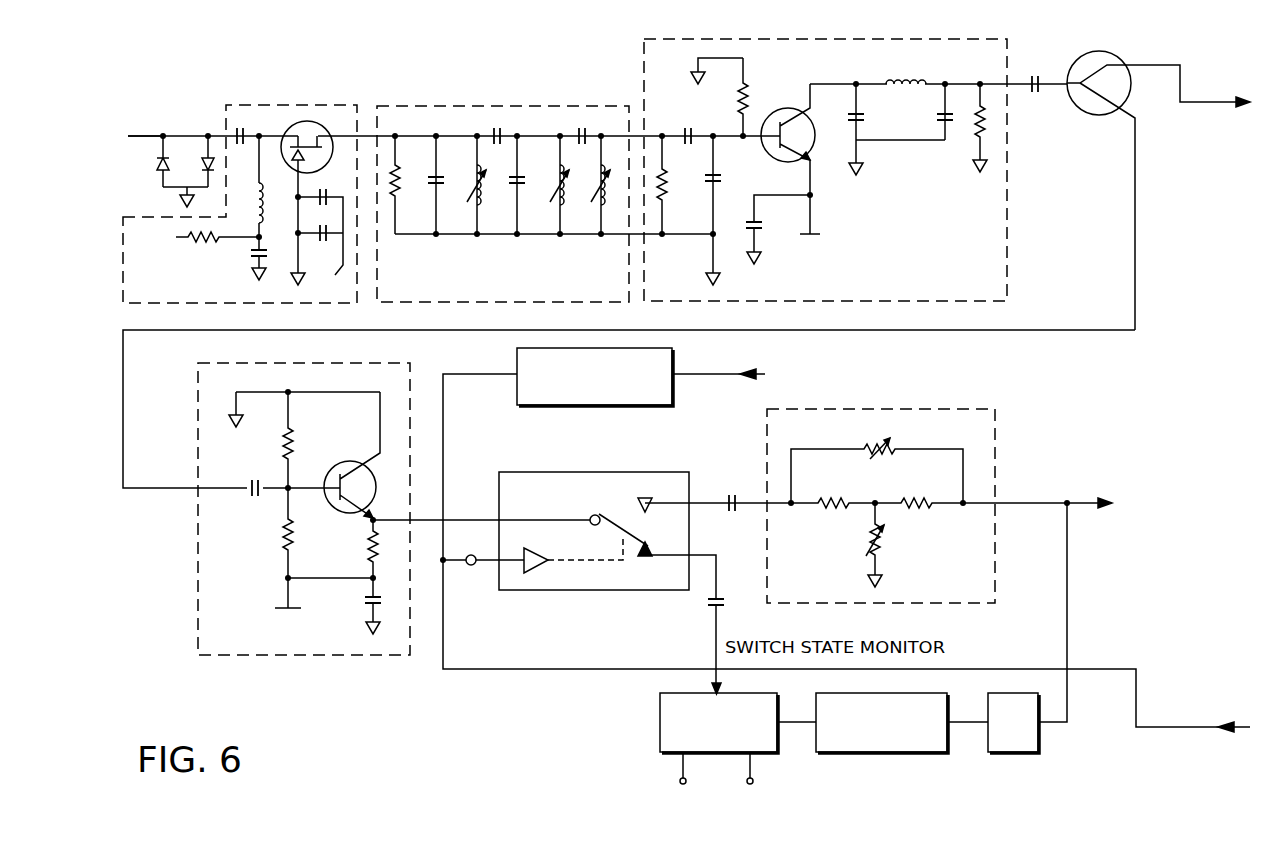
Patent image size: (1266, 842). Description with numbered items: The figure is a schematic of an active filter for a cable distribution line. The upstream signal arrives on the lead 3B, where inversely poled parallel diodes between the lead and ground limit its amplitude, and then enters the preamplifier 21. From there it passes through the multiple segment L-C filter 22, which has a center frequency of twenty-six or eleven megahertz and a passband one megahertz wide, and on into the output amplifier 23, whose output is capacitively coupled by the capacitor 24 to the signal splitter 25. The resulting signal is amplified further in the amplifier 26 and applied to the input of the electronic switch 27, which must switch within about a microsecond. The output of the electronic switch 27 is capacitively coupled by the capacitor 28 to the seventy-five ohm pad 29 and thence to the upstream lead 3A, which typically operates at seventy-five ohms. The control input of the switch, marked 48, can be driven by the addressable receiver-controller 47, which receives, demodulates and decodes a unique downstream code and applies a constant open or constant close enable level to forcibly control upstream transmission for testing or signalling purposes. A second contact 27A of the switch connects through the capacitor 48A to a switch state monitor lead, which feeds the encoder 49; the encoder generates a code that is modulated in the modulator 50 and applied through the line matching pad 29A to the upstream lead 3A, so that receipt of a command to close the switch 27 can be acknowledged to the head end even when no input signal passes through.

The lead 3B is at (147, 136).
The preamplifier 21 is at (263, 303).
The multiple segment L-C filter 22 is at (515, 302).
The output amplifier 23 is at (820, 301).
The capacitor 24 is at (1036, 93).
The signal splitter 25 is at (1103, 115).
The amplifier 26 is at (318, 655).
The electronic switch 27 is at (598, 471).
The second contact 27A is at (648, 498).
The capacitor 28 is at (730, 496).
The 75 ohm pad 29 is at (901, 410).
The 75 ohm line matching pad 29A is at (991, 753).
The lead 3A is at (1078, 501).
The addressable receiver-controller 47 is at (672, 388).
The control input terminal 48 is at (471, 567).
The capacitor 48A is at (713, 610).
The encoder 49 is at (660, 720).
The modulator 50 is at (893, 754).